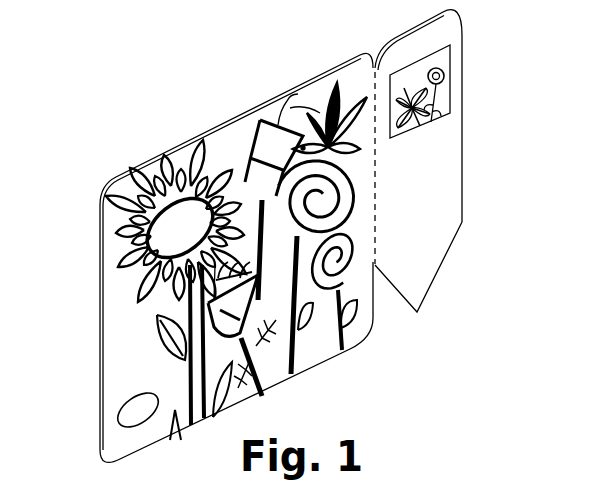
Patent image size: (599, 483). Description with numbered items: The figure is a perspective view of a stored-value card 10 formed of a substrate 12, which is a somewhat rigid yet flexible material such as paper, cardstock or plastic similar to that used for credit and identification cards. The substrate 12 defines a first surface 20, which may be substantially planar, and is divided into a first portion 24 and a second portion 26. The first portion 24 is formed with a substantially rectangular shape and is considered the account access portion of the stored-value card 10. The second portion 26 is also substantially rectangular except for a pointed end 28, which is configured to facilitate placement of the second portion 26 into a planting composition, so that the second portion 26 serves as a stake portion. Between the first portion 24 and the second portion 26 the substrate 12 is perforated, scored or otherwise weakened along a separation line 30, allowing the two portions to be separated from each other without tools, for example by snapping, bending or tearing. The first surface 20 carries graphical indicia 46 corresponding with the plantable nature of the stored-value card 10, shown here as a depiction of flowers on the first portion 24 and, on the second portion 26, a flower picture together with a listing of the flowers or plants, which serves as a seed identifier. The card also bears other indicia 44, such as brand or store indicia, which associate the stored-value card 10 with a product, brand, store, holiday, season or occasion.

The stored-value card 10 is at (107, 127).
The substrate 12 is at (100, 207).
The first surface 20 is at (125, 352).
The first portion 24 is at (327, 90).
The second portion 26 is at (422, 48).
The pointed end 28 is at (415, 293).
The separation line 30 is at (376, 70).
The indicia 44 is at (120, 433).
The graphical indicia 46 is at (455, 105).